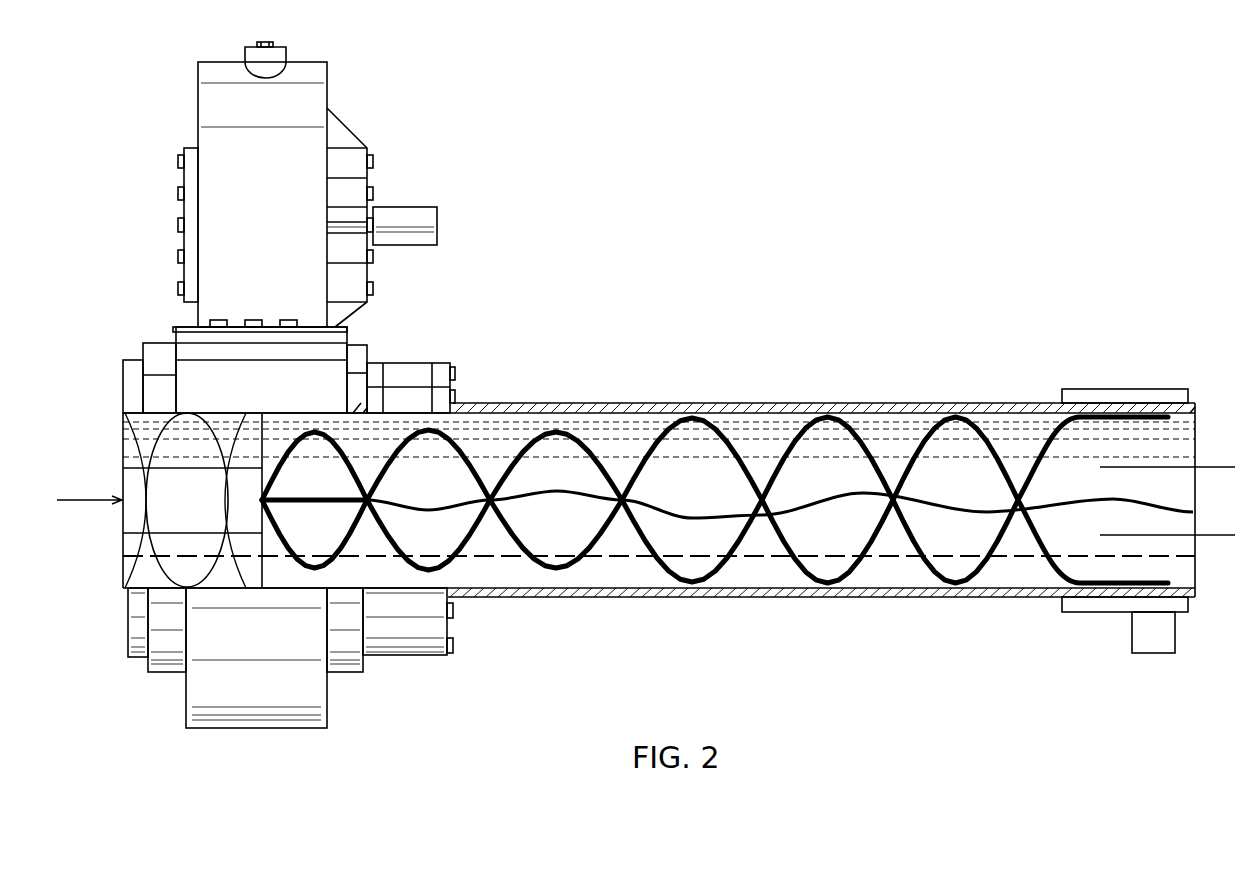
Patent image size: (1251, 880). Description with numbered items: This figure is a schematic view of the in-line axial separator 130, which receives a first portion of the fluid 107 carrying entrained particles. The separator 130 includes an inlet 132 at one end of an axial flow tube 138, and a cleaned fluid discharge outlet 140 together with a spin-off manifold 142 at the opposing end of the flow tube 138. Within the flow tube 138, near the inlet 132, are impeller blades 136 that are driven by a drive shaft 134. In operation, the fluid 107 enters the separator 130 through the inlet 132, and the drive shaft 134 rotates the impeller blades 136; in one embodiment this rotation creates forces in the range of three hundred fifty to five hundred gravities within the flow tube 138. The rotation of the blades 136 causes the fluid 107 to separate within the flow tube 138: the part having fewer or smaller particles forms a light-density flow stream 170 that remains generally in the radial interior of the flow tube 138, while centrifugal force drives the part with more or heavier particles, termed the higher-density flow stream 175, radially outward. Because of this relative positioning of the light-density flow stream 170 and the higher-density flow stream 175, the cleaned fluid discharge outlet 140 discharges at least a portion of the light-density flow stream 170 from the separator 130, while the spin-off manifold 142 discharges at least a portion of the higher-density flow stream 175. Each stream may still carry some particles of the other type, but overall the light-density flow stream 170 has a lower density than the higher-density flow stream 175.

The in-line axial separator 130 is at (770, 207).
The drive shaft 134 is at (428, 207).
The axial flow tube 138 is at (887, 410).
The inlet 132 is at (123, 476).
The impeller blades 136 is at (188, 470).
The fluid 107 is at (95, 503).
The higher-density flow stream 175 is at (533, 433).
The light-density flow stream 170 is at (708, 518).
The cleaned fluid discharge outlet 140 is at (1208, 467).
The spin-off manifold 142 is at (1160, 655).